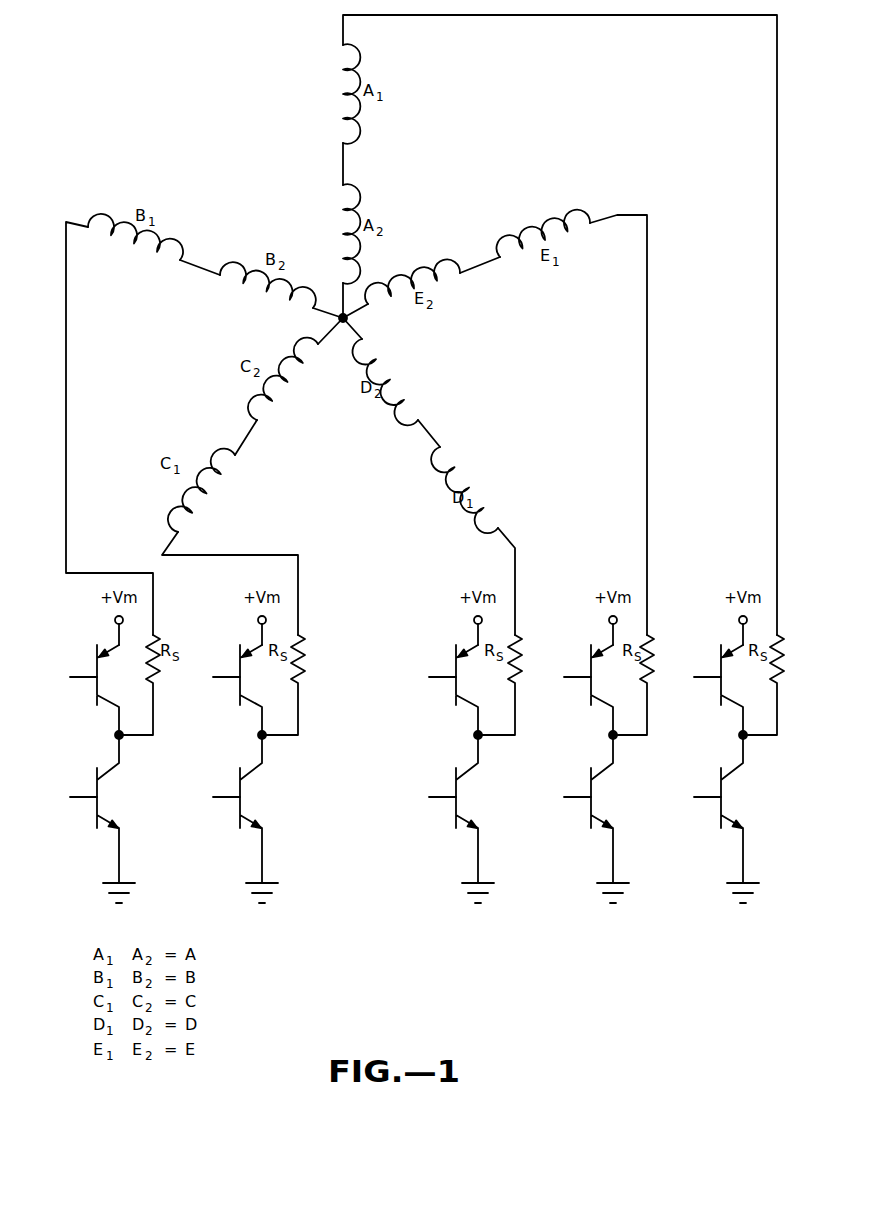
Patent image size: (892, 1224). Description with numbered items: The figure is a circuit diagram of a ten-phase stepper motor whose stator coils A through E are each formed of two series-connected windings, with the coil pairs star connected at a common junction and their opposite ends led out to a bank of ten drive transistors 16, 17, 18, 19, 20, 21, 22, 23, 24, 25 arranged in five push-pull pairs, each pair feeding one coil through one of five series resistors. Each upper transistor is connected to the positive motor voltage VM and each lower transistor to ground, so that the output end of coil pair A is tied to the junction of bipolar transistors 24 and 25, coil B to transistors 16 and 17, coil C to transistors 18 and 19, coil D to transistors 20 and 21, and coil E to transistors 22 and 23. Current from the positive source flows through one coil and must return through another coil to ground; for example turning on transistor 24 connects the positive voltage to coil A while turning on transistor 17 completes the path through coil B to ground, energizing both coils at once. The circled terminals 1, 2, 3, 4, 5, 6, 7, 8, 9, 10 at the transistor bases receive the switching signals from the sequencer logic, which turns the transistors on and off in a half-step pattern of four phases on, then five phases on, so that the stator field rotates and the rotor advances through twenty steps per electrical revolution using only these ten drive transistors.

The input terminal 1 is at (689, 677).
The input terminal 2 is at (689, 797).
The input terminal 3 is at (65, 677).
The input terminal 4 is at (65, 797).
The input terminal 5 is at (208, 677).
The input terminal 6 is at (208, 797).
The input terminal 7 is at (424, 677).
The input terminal 8 is at (424, 797).
The input terminal 9 is at (559, 677).
The input terminal 10 is at (559, 797).
The control transistor 16 is at (110, 690).
The control transistor 17 is at (110, 809).
The control transistor 18 is at (253, 690).
The control transistor 19 is at (253, 809).
The control transistor 20 is at (469, 690).
The control transistor 21 is at (469, 809).
The control transistor 22 is at (604, 690).
The control transistor 23 is at (604, 809).
The bipolar transistor 24 is at (734, 690).
The bipolar transistor 25 is at (734, 809).